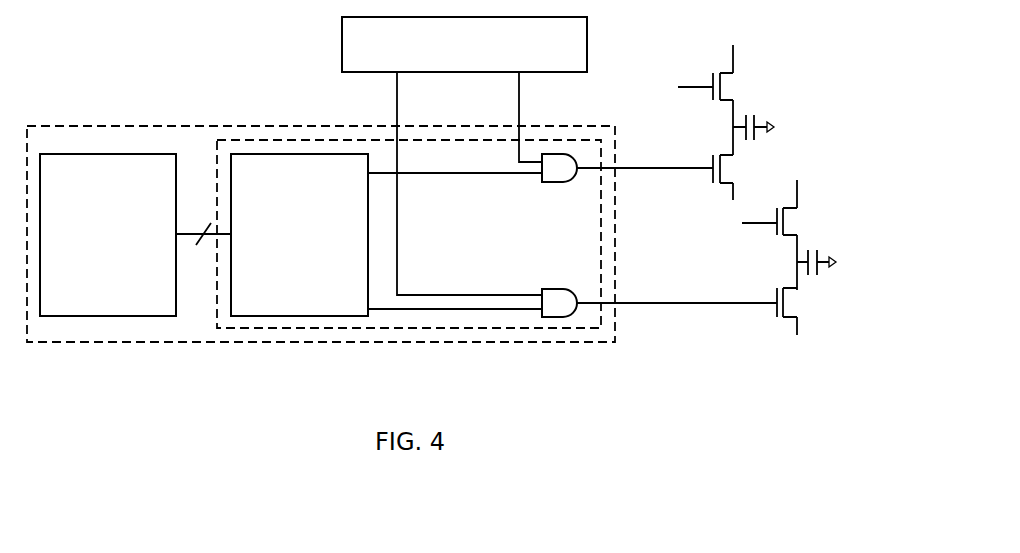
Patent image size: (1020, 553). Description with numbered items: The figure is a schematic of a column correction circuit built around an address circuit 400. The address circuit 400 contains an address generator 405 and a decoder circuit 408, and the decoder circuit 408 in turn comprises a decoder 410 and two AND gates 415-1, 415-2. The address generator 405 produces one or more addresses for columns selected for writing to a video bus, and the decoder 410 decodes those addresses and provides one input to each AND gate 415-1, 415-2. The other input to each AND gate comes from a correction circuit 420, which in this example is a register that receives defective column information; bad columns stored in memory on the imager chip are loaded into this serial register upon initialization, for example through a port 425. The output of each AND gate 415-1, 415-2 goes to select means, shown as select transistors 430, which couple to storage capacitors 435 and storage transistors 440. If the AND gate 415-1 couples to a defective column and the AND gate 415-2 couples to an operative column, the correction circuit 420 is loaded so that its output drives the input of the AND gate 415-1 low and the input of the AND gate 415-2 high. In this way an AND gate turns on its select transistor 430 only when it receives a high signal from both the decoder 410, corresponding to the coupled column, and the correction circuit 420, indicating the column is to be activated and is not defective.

The address circuit 400 is at (107, 126).
The address generator 405 is at (89, 316).
The decoder circuit 408 is at (218, 140).
The decoder 410 is at (310, 316).
The AND gate 415-1 is at (572, 156).
The AND gate 415-2 is at (548, 288).
The correction circuit 420 is at (587, 43).
The port 425 is at (332, 40).
The select transistors 430 is at (724, 168).
The storage capacitors 435 is at (760, 115).
The storage transistors 440 is at (725, 85).